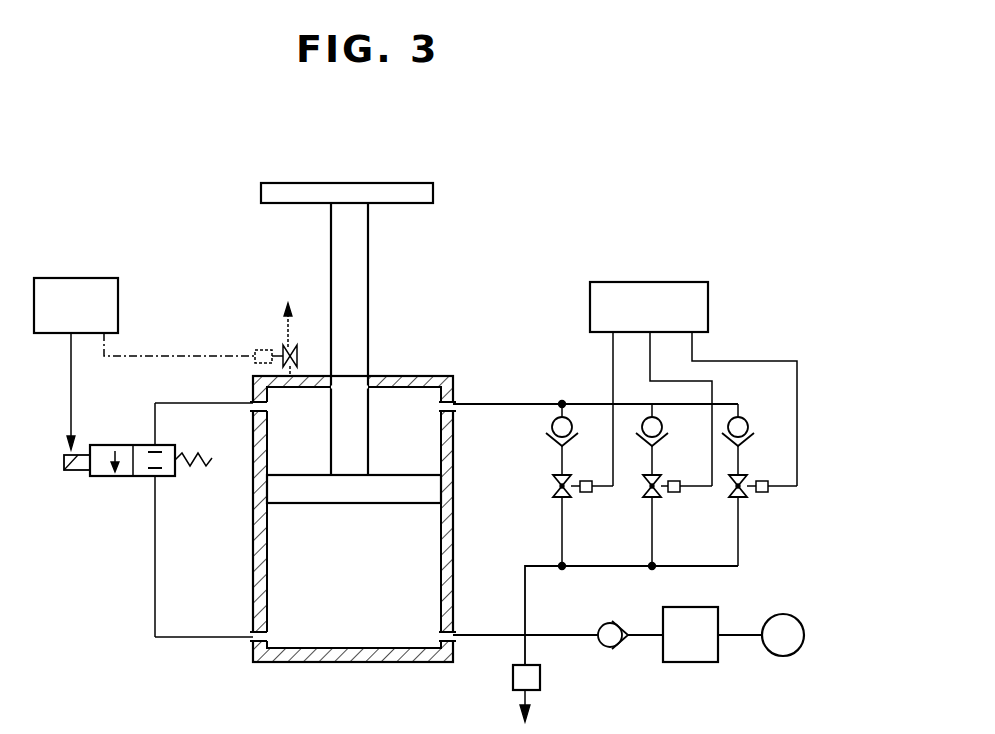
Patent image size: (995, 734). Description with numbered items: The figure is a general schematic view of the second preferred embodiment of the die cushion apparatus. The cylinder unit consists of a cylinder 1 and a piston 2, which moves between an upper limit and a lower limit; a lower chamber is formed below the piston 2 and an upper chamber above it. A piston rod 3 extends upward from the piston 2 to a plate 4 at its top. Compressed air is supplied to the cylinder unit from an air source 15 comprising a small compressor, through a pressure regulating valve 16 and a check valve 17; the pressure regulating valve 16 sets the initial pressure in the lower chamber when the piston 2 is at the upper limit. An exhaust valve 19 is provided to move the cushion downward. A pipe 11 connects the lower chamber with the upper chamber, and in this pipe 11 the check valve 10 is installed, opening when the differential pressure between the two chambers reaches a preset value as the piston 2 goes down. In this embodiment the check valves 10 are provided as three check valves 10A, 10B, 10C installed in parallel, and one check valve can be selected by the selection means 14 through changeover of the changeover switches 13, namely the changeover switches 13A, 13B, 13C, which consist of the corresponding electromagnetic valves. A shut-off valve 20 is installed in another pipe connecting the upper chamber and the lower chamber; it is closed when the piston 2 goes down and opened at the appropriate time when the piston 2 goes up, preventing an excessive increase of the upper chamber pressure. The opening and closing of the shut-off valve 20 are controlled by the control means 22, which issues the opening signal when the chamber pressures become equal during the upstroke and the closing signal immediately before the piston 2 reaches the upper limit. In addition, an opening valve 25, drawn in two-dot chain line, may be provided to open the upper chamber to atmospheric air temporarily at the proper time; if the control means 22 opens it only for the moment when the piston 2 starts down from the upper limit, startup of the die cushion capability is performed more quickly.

The cylinder 1 is at (430, 378).
The piston 2 is at (427, 492).
The piston rod 3 is at (362, 272).
The plate 4 is at (434, 191).
The check valve 10 is at (803, 455).
The check valve 10A is at (549, 429).
The check valve 10B is at (692, 444).
The check valve 10C is at (756, 426).
The pipe 11 is at (507, 403).
The changeover switches 13 is at (784, 518).
The changeover switch 13A is at (552, 492).
The changeover switch 13B is at (657, 500).
The changeover switch 13C is at (745, 500).
The selection means 14 is at (622, 285).
The air source 15 is at (781, 614).
The pressure regulating valve 16 is at (680, 608).
The check valve 17 is at (604, 622).
The exhaust valve 19 is at (540, 678).
The shut-off valve 20 is at (103, 478).
The control means 22 is at (100, 285).
The opening valve 25 is at (281, 346).